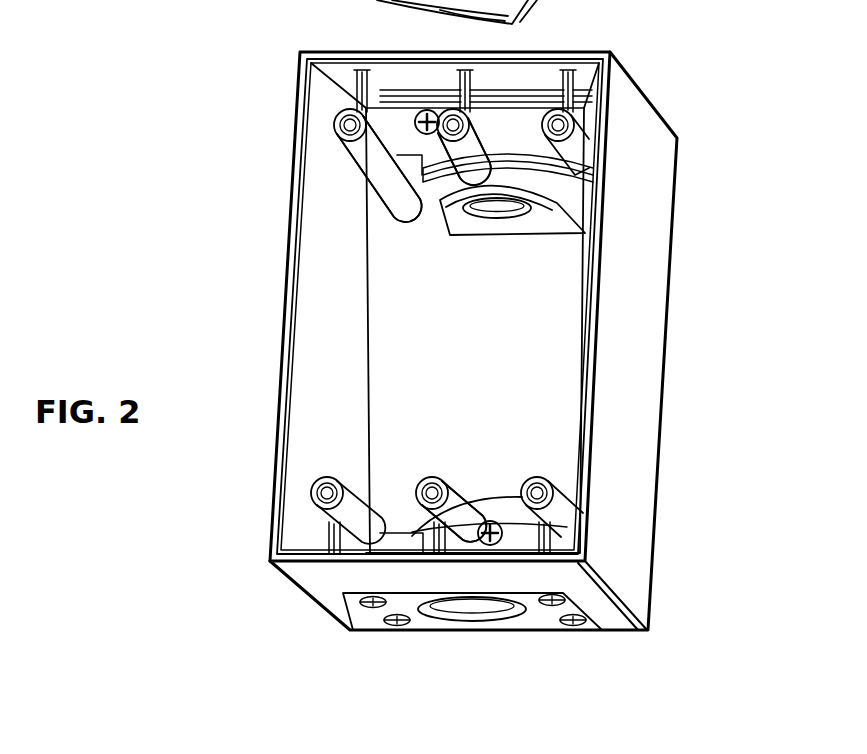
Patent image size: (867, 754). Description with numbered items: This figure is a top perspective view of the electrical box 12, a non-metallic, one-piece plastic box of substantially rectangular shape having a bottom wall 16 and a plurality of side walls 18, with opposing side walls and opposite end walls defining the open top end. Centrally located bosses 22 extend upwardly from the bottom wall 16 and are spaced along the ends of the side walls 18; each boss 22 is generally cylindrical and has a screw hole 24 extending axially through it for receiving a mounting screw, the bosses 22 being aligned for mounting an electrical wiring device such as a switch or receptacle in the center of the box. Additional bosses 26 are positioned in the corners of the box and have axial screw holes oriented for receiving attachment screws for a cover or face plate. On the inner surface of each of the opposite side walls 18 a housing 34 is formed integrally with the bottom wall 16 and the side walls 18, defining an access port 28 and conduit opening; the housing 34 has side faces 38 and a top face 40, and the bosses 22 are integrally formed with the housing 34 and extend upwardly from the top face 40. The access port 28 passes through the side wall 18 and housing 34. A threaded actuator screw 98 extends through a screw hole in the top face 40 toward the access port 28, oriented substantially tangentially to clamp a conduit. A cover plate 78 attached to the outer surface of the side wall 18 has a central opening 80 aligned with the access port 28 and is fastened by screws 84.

The electrical box 12 is at (503, 315).
The bottom wall 16 is at (432, 312).
The side walls 18 is at (510, 75).
The centrally located bosses 22 is at (489, 276).
The screw hole 24 is at (452, 130).
The bosses 26 is at (350, 152).
The access port 28 is at (240, 0).
The housing 34 is at (560, 222).
The side faces 38 is at (575, 210).
The top face 40 is at (410, 120).
The cover plate 78 is at (583, 608).
The central opening 80 is at (330, 0).
The screws 84 is at (567, 598).
The actuator screw 98 is at (427, 112).